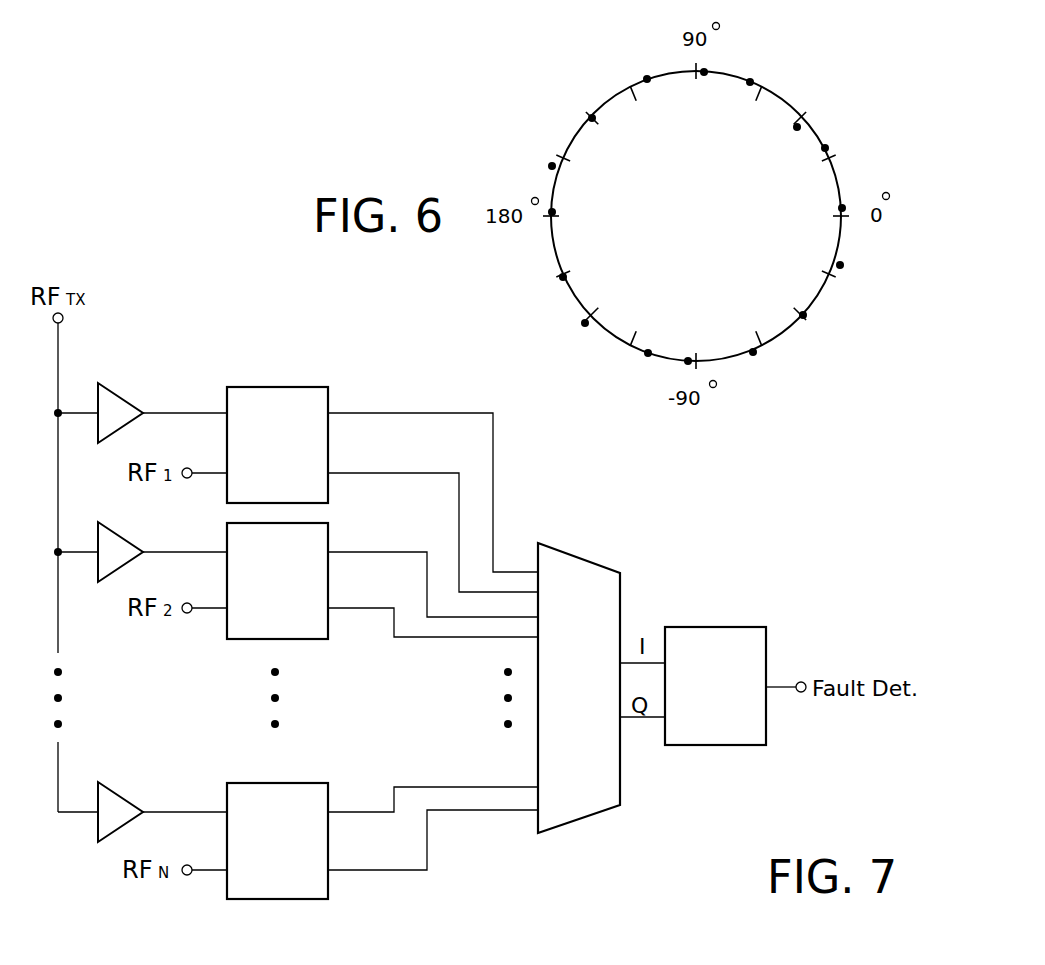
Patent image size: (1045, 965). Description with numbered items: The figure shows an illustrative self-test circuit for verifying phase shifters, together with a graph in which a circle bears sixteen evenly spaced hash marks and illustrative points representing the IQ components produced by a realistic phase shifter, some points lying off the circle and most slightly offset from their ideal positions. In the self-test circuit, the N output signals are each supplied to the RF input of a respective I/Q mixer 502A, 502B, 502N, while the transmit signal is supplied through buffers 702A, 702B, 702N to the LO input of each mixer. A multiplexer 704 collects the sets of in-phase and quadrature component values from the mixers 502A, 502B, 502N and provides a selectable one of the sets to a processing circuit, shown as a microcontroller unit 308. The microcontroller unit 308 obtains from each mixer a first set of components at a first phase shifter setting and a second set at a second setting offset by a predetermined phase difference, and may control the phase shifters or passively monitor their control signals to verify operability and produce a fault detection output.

The buffer 702A is at (124, 392).
The buffer 702B is at (124, 531).
The buffer 702N is at (124, 791).
The I/Q mixer 502A is at (252, 387).
The I/Q mixer 502B is at (295, 639).
The I/Q mixer 502N is at (252, 783).
The multiplexer 704 is at (578, 556).
The microcontroller unit 308 is at (708, 627).